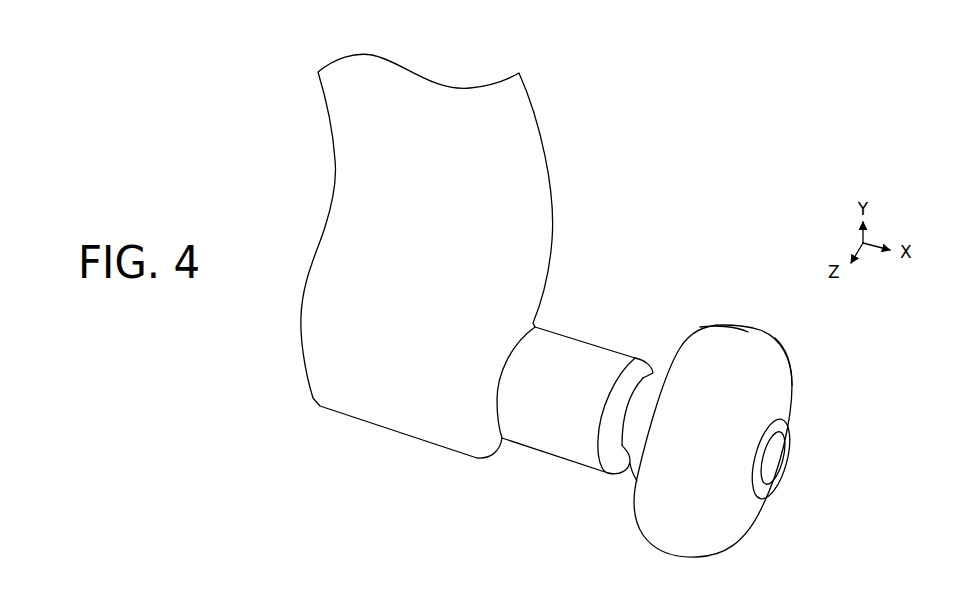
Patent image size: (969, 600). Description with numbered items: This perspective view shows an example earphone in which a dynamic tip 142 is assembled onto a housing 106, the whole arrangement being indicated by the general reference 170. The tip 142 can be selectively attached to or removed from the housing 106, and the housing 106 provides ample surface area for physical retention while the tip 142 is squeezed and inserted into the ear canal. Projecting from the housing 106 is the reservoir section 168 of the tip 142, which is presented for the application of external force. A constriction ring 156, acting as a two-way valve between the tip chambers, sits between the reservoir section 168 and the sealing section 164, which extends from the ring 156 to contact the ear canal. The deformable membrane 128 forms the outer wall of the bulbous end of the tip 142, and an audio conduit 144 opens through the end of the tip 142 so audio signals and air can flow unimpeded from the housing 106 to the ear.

The assembly 170 is at (99, 45).
The housing 106 is at (428, 317).
The reservoir section 168 is at (555, 453).
The constriction ring 156 is at (652, 361).
The tip 142 is at (720, 451).
The deformable membrane 128 is at (744, 329).
The sealing section 164 is at (801, 373).
The audio conduit 144 is at (780, 469).